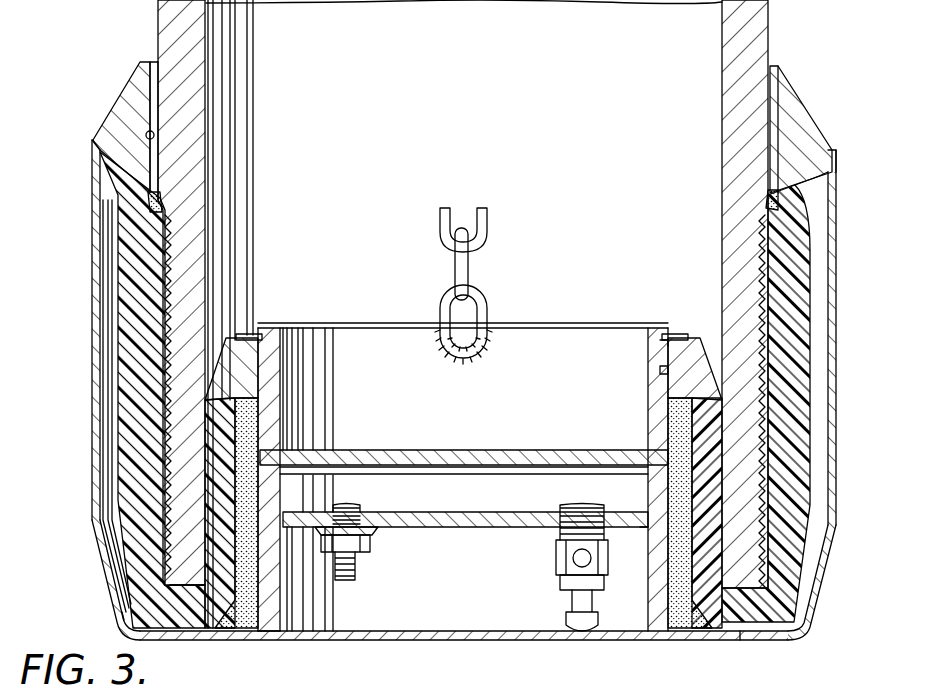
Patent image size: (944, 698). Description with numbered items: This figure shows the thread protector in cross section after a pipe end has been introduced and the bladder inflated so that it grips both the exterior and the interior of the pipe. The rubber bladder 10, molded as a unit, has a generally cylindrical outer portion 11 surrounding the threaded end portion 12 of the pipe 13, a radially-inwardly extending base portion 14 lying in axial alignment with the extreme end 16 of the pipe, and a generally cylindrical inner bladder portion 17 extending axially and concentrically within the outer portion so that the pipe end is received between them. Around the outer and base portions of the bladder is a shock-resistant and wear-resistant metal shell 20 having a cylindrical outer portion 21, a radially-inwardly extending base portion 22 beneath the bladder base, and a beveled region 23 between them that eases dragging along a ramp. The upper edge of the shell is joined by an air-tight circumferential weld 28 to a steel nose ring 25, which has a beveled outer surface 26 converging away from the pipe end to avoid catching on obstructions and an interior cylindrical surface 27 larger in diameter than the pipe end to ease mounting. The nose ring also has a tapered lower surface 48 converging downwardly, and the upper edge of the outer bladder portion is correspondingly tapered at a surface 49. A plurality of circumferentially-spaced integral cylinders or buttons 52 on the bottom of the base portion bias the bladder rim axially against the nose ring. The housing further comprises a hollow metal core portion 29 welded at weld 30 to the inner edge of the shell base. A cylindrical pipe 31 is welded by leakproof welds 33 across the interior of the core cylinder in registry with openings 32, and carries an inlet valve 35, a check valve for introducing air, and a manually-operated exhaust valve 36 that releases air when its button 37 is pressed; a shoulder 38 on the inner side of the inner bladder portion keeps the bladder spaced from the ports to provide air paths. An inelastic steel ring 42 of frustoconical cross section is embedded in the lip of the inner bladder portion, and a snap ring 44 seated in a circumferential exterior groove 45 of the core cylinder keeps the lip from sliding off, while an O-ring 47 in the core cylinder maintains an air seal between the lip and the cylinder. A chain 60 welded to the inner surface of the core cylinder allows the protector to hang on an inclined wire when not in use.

The rubber bladder 10 is at (106, 401).
The outer bladder portion 11 is at (125, 308).
The threaded end portion 12 is at (722, 266).
The pipe 13 is at (165, 12).
The base portion 14 is at (172, 612).
The extreme end 16 is at (745, 641).
The inner bladder portion 17 is at (255, 502).
The metal shell 20 is at (91, 566).
The outer portion of shell 21 is at (834, 370).
The base portion of shell 22 is at (706, 641).
The beveled region 23 is at (820, 582).
The nose ring 25 is at (128, 116).
The beveled outer surface 26 is at (135, 80).
The interior cylindrical surface 27 is at (146, 135).
The circumferential weld 28 is at (832, 152).
The inner or core portion 29 is at (655, 412).
The weld 30 is at (262, 641).
The cylindrical pipe 31 is at (468, 527).
The openings 32 is at (655, 490).
The welds 33 is at (648, 530).
The inlet valve 35 is at (357, 566).
The exhaust valve 36 is at (560, 558).
The button 37 is at (566, 618).
The shoulder 38 is at (660, 452).
The inelastic ring 42 is at (672, 356).
The snap ring 44 is at (680, 334).
The circumferential exterior groove 45 is at (660, 343).
The O-ring 47 is at (668, 372).
The tapered lower surface 48 is at (790, 195).
The tapered surface 49 is at (140, 180).
The cylinders or buttons 52 is at (205, 632).
The chain 60 is at (465, 262).